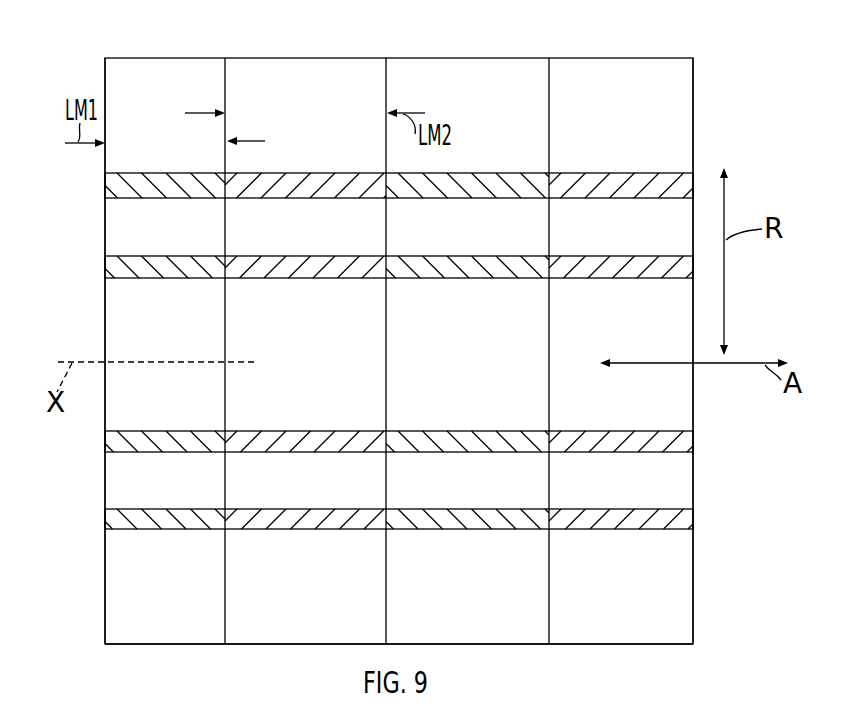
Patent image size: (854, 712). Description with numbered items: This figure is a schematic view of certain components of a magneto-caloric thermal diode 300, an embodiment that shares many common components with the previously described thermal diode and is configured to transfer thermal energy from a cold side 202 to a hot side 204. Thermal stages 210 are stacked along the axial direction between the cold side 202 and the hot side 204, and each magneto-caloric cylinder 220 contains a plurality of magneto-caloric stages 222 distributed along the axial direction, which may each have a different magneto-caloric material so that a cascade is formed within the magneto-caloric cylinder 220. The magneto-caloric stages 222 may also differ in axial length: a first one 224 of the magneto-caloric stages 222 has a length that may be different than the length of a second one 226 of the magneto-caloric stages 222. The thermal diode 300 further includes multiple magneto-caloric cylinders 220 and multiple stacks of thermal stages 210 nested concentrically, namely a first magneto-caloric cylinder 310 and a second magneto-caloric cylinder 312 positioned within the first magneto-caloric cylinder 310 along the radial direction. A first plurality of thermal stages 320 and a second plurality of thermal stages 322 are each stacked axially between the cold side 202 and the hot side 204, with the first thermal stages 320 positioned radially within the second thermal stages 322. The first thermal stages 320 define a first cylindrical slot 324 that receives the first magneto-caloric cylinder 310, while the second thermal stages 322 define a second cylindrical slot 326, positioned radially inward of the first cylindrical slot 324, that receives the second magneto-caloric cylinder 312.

The magneto-caloric thermal diode 300 is at (733, 56).
The thermal stages 210 is at (170, 58).
The magneto-caloric cylinder 220 is at (105, 191).
The magneto-caloric stages 222 is at (158, 200).
The first one of magneto-caloric stages 224 is at (160, 173).
The second one of magneto-caloric stages 226 is at (297, 173).
The second plurality of thermal stages 322 is at (207, 423).
The second magneto-caloric cylinder 312 is at (693, 443).
The first magneto-caloric cylinder 310 is at (693, 520).
The second cylindrical slot 326 is at (96, 457).
The first cylindrical slot 324 is at (96, 538).
The cold side 202 is at (97, 652).
The hot side 204 is at (690, 656).
The first plurality of thermal stages 320 is at (188, 637).